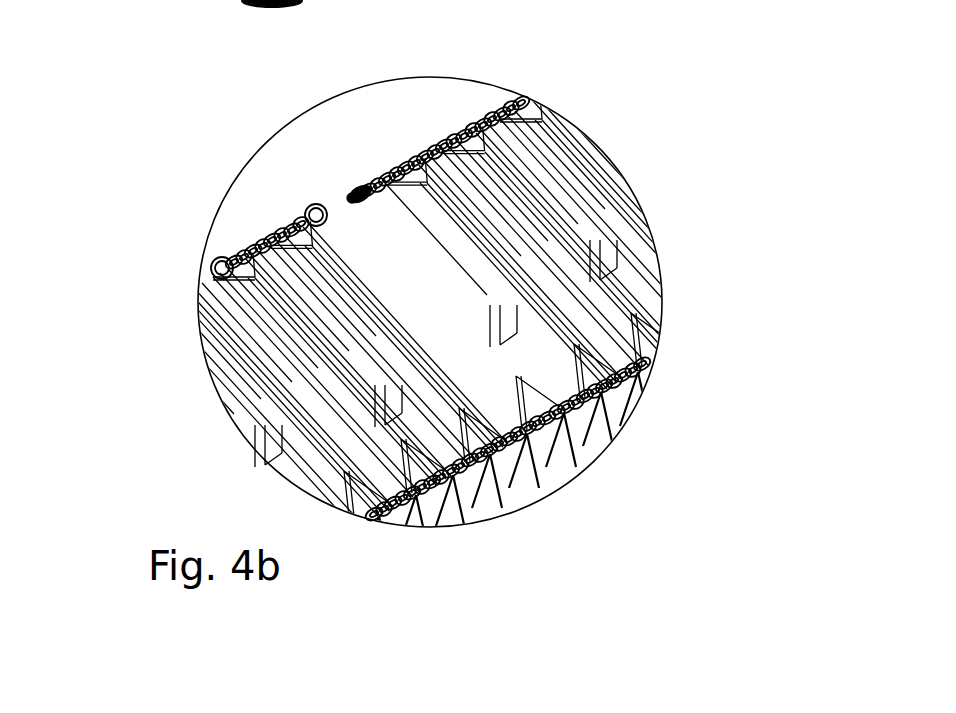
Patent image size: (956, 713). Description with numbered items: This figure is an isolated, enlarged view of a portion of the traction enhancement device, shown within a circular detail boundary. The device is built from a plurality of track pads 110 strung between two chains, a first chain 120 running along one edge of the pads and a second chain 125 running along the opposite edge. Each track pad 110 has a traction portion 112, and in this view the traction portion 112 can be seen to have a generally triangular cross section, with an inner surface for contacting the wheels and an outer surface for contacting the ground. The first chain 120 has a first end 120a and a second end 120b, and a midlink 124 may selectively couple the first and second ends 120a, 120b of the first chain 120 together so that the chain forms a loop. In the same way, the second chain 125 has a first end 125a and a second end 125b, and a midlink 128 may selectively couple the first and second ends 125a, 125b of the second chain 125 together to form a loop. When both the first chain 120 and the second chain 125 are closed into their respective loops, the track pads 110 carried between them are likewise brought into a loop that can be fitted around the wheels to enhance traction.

The track pad 110 is at (584, 231).
The traction portion 112 is at (520, 255).
The first chain 120 is at (418, 507).
The first end of the first chain 120a is at (606, 403).
The second end of the first chain 120b is at (655, 353).
The midlink 124 is at (589, 420).
The second chain 125 is at (208, 252).
The first end of the second chain 125a is at (394, 163).
The second end of the second chain 125b is at (308, 206).
The midlink 128 is at (357, 171).